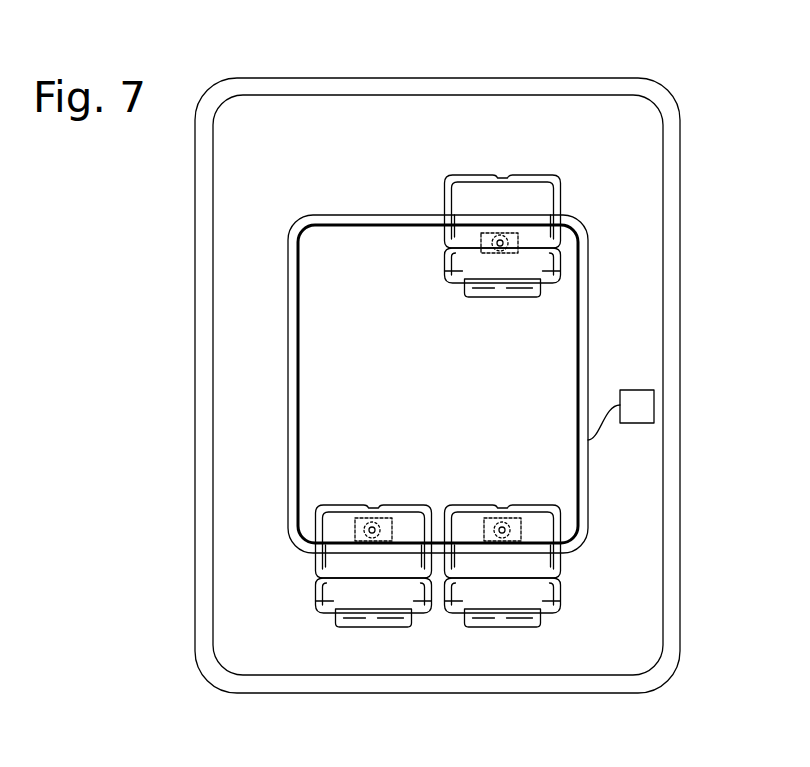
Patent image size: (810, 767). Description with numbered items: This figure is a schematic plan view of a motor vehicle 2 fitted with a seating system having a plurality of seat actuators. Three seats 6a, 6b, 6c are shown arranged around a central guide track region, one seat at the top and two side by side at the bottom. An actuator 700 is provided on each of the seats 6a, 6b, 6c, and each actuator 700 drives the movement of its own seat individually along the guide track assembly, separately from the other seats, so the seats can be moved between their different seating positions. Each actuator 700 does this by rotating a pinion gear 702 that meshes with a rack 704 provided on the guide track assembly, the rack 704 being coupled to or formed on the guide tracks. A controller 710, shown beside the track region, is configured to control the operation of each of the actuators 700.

The vehicle 2 is at (712, 120).
The seat 6a is at (466, 200).
The seat 6b is at (345, 598).
The seat 6c is at (535, 597).
The actuator 700 is at (481, 244).
The pinion gear 702 is at (506, 256).
The rack 704 is at (577, 378).
The controller 710 is at (654, 400).